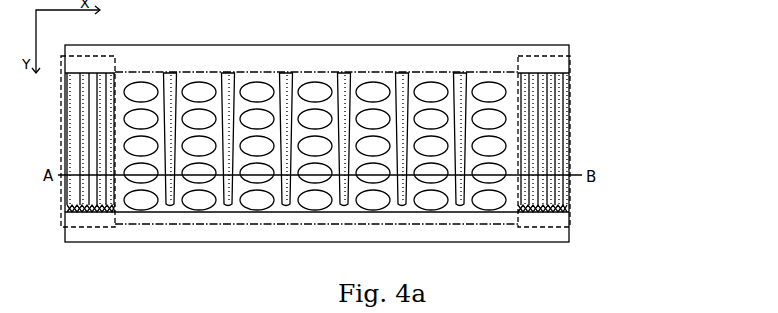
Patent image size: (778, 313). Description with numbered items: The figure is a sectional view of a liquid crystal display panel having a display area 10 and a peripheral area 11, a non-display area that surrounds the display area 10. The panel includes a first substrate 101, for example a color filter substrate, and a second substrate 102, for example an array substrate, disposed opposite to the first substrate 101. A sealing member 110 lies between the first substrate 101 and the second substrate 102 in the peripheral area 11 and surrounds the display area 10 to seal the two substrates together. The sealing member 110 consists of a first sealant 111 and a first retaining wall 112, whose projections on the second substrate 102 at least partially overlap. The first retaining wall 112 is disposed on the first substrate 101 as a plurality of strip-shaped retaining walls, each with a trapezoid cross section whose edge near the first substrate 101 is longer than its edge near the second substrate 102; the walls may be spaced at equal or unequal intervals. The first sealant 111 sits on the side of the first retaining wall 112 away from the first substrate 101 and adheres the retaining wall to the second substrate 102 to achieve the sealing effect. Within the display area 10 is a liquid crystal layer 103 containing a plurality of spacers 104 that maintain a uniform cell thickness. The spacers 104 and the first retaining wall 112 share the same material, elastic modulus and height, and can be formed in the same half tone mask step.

The display area 10 is at (388, 72).
The peripheral area 11 is at (78, 55).
The first substrate 101 is at (553, 72).
The second substrate 102 is at (550, 234).
The liquid crystal layer 103 is at (495, 127).
The spacer 104 is at (462, 111).
The sealing member 110 is at (372, 142).
The first sealant 111 is at (558, 205).
The first retaining wall 112 is at (562, 162).